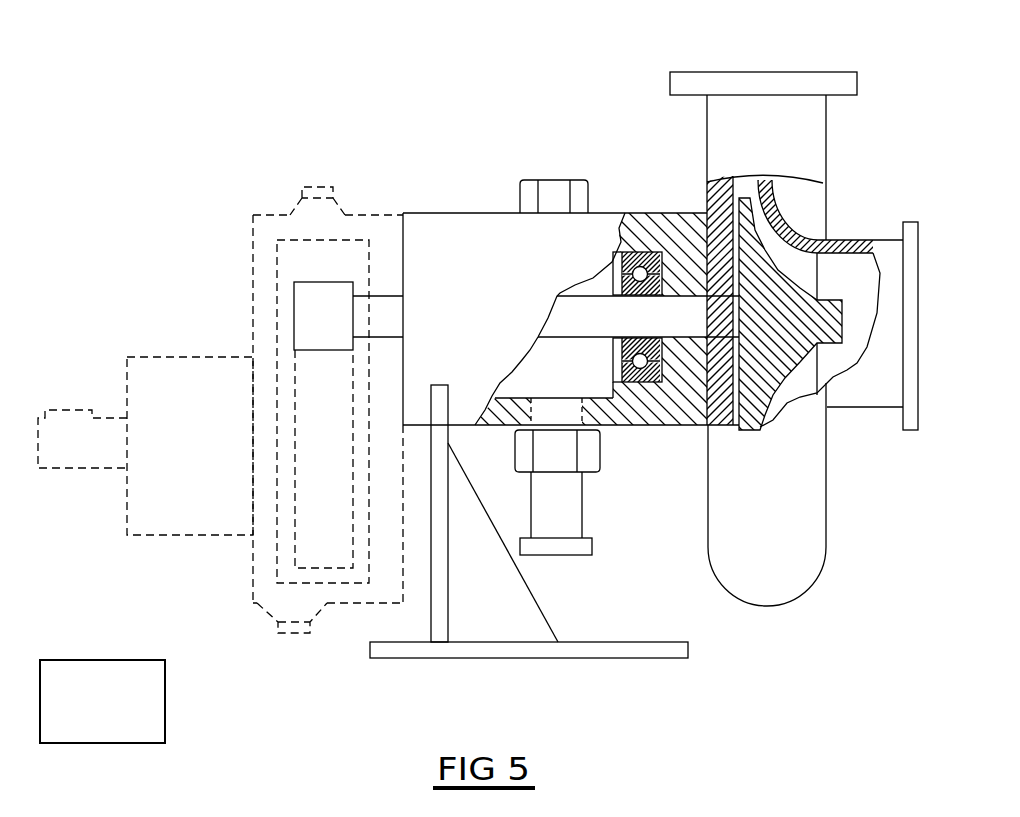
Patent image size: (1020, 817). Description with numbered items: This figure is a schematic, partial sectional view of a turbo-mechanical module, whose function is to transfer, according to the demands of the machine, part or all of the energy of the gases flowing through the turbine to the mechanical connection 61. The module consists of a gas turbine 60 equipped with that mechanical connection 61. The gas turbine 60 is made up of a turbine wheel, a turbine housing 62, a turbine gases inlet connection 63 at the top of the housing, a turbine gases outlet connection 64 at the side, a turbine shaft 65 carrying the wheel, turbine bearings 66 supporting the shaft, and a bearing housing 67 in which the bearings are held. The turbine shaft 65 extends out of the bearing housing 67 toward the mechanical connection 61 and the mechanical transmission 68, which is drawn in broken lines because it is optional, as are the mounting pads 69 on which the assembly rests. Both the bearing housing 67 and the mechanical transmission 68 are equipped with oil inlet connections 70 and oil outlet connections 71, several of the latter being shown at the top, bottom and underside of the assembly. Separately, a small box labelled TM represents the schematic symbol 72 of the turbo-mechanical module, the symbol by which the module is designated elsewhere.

The gas turbine 60 is at (833, 287).
The mechanical connection 61 is at (307, 295).
The turbine housing 62 is at (812, 148).
The turbine gases inlet connection 63 is at (775, 72).
The turbine gases outlet connection 64 is at (893, 222).
The turbine shaft 65 is at (587, 321).
The turbine bearings 66 is at (641, 266).
The bearing housing 67 is at (680, 427).
The mechanical transmission 68 is at (267, 345).
The mounting pads 69 is at (518, 660).
The oil inlet connections 70 is at (562, 176).
The oil outlet connections 71 is at (595, 550).
The schematic symbol of the turbo-mechanical module 72 is at (110, 740).